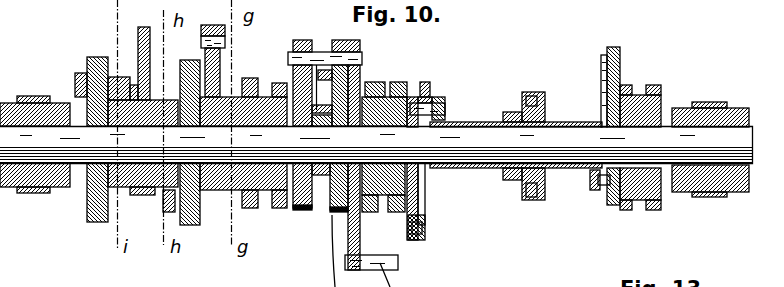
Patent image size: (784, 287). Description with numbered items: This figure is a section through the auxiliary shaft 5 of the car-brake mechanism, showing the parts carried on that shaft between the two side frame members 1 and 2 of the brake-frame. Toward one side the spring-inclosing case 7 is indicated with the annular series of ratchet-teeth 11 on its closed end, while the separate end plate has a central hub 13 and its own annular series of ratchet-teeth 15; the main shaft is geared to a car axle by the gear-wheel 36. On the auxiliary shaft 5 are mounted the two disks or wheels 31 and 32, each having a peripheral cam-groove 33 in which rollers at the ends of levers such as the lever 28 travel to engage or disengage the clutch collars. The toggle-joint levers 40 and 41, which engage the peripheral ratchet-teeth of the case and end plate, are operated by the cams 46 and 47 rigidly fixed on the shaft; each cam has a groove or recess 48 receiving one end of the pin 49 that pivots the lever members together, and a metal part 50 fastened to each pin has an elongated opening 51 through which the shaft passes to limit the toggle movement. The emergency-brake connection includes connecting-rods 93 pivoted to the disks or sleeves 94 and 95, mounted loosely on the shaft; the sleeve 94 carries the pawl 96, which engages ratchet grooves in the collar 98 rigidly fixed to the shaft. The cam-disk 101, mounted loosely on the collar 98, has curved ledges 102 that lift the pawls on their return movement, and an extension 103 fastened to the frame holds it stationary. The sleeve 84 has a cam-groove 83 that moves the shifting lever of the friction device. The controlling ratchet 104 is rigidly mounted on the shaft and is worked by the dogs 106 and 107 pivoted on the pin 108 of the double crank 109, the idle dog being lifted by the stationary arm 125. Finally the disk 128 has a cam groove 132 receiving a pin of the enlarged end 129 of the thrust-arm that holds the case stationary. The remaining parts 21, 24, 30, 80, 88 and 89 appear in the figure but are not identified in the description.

The side frame member 1 is at (25, 97).
The side frame member 2 is at (718, 108).
The auxiliary shaft 5 is at (478, 142).
The inclosing case 7 is at (488, 0).
The annular series of ratchet-teeth 11 is at (440, 0).
The central hub 13 is at (590, 0).
The annular series of ratchet-teeth 15 is at (625, 0).
The element 21 is at (606, 5).
The element 24 is at (728, 0).
The lever 28 is at (678, 5).
The element 30 is at (678, 0).
The disk 31 is at (403, 80).
The disk 32 is at (660, 85).
The cam-groove 33 is at (387, 195).
The gear-wheel 36 is at (345, 0).
The toggle-joint lever 40 is at (432, 103).
The toggle-joint lever 41 is at (604, 183).
The cam 46 is at (412, 222).
The cam 47 is at (606, 84).
The cam groove 48 is at (420, 240).
The pin 49 is at (426, 108).
The metal part 50 is at (420, 232).
The elongated opening 51 is at (418, 190).
The element 80 is at (290, 0).
The cam-groove 83 is at (268, 210).
The sleeve 84 is at (258, 108).
The pin 88 is at (222, 58).
The gear 89 is at (203, 38).
The connecting-rod 93 is at (76, 78).
The disk or sleeve 94 is at (88, 63).
The disk or sleeve 95 is at (200, 215).
The pawl 96 is at (114, 77).
The collar 98 is at (112, 215).
The cam-disk 101 is at (143, 197).
The ledge 102 is at (120, 100).
The extension 103 is at (143, 32).
The ratchet 104 is at (306, 208).
The dog 106 is at (306, 50).
The dog 107 is at (360, 52).
The pin 108 is at (350, 67).
The double crank 109 is at (362, 255).
The stationary arm 125 is at (300, 210).
The cam disk 128 is at (530, 200).
The enlarged end 129 is at (512, 110).
The cam groove 132 is at (533, 96).